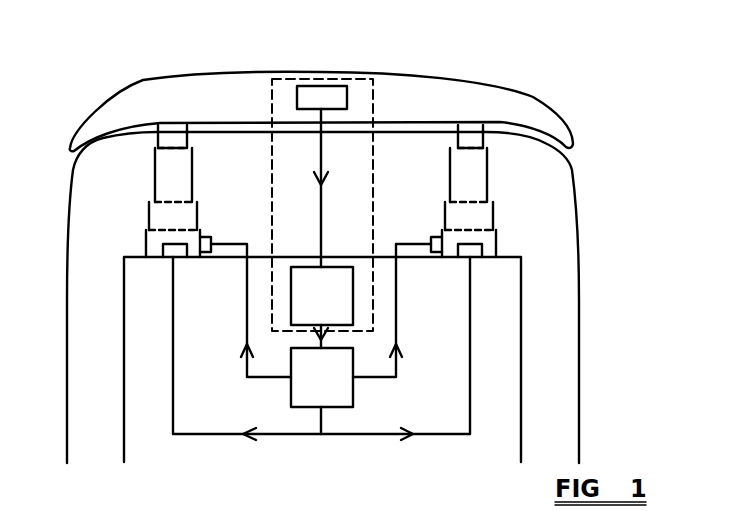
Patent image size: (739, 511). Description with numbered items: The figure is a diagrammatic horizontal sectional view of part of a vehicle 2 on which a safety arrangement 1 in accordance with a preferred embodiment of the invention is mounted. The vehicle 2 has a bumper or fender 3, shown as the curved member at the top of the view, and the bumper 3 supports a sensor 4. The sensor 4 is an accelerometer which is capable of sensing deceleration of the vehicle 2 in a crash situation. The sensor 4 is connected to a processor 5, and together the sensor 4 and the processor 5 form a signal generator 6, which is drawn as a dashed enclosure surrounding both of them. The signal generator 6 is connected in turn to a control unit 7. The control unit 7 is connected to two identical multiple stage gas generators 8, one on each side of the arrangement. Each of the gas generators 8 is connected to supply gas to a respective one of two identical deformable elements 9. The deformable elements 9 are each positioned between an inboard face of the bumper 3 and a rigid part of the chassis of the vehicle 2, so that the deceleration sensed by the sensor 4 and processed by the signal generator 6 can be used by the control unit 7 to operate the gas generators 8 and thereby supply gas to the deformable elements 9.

The safety arrangement 1 is at (112, 73).
The vehicle 2 is at (579, 302).
The bumper or fender 3 is at (415, 72).
The sensor 4 is at (315, 100).
The processor 5 is at (353, 292).
The signal generator 6 is at (376, 178).
The control unit 7 is at (353, 393).
The multiple stage gas generator 8 is at (176, 252).
The deformable element 9 is at (193, 199).